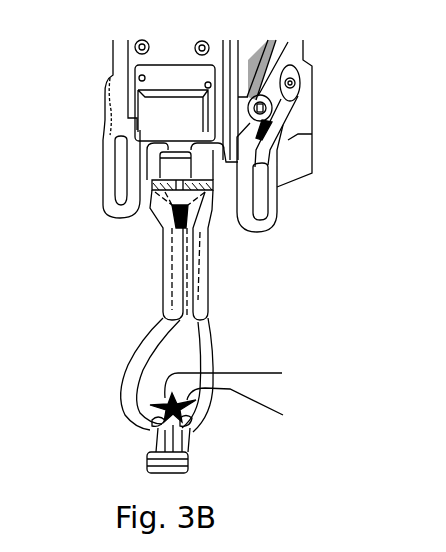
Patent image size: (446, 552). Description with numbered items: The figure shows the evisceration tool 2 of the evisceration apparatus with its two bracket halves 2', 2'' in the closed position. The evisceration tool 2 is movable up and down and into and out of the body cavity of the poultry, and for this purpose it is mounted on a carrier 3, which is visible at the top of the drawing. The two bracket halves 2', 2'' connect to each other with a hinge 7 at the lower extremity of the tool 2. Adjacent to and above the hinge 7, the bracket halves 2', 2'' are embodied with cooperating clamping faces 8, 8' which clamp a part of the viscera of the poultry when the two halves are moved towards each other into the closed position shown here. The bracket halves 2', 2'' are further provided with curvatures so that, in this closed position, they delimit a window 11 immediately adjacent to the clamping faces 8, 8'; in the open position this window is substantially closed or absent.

The evisceration tool 2 is at (263, 255).
The bracket half 2' is at (108, 374).
The bracket half 2'' is at (267, 375).
The carrier 3 is at (183, 124).
The hinge 7 is at (146, 459).
The clamping face 8 is at (248, 410).
The clamping face 8' is at (241, 382).
The window 11 is at (163, 366).